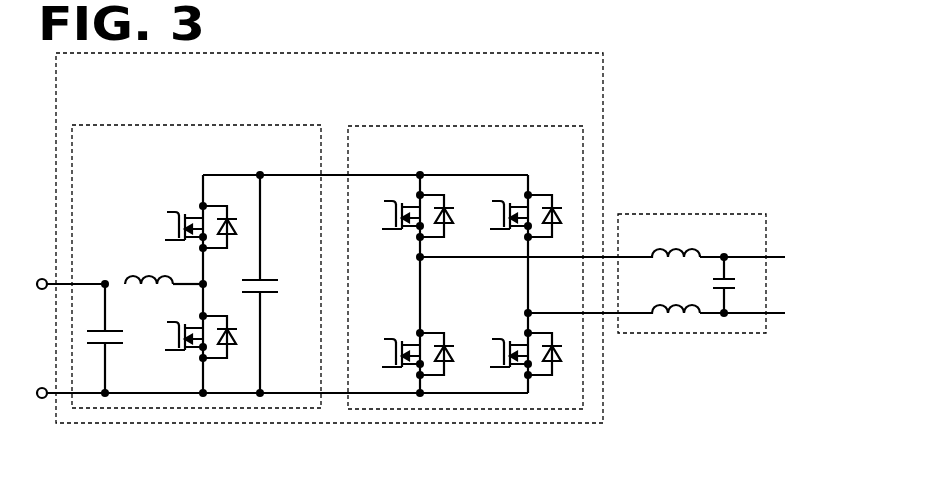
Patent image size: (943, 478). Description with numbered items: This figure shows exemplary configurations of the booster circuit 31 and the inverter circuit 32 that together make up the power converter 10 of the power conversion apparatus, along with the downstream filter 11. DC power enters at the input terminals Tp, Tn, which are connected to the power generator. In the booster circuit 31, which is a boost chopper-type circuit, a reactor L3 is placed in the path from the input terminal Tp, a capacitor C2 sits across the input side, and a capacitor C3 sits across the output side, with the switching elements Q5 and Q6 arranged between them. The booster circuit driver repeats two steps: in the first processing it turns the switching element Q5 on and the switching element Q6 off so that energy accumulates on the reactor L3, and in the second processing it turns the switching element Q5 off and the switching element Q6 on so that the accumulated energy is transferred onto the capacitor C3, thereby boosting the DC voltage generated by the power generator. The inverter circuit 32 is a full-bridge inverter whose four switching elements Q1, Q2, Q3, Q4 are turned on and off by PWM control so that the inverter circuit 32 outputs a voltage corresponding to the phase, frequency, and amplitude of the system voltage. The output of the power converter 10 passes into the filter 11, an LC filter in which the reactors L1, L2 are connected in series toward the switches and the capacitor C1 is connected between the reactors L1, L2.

The power converter 10 is at (489, 53).
The booster circuit 31 is at (245, 125).
The inverter circuit 32 is at (520, 126).
The filter 11 is at (747, 201).
The switching element Q1 is at (412, 212).
The switching element Q2 is at (412, 350).
The switching element Q3 is at (520, 212).
The switching element Q4 is at (520, 350).
The switching element Q5 is at (195, 334).
The switching element Q6 is at (195, 225).
The reactor L1 is at (676, 250).
The reactor L2 is at (676, 306).
The reactor L3 is at (134, 276).
The capacitor C1 is at (727, 284).
The capacitor C2 is at (113, 330).
The capacitor C3 is at (268, 280).
The input terminal Tp is at (29, 277).
The input terminal Tn is at (29, 387).